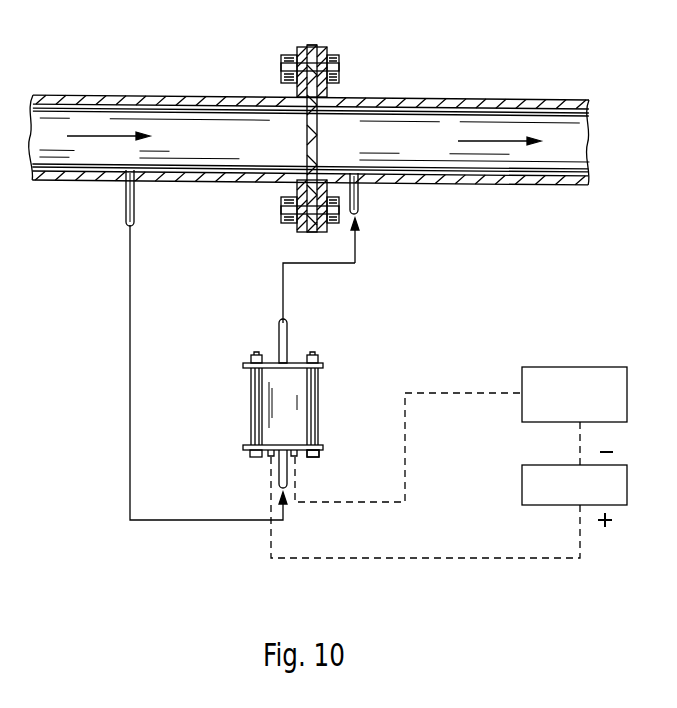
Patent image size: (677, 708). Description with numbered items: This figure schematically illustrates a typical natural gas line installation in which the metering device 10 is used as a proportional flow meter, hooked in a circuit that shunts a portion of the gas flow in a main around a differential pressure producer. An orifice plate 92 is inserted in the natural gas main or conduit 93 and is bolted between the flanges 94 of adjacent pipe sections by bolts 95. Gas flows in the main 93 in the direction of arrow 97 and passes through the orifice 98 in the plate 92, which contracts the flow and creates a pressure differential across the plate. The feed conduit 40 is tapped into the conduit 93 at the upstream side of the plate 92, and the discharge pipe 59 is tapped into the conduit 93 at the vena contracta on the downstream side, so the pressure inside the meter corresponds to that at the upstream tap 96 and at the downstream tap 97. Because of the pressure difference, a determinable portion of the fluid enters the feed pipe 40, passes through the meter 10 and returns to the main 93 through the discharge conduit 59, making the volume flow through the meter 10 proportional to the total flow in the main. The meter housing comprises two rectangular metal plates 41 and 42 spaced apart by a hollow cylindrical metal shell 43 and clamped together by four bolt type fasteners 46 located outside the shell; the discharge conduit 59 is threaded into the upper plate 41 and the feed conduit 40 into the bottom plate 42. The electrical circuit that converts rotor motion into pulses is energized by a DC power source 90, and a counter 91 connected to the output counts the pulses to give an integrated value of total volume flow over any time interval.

The metering device 10 is at (298, 403).
The feed conduit 40 is at (279, 477).
The upper plate 41 is at (243, 365).
The bottom plate 42 is at (243, 447).
The cylindrical metal shell 43 is at (250, 402).
The bolt type fasteners 46 is at (320, 453).
The discharge conduit 59 is at (288, 333).
The DC power source 90 is at (627, 480).
The counter 91 is at (627, 393).
The orifice plate 92 is at (314, 47).
The conduit 93 is at (490, 100).
The flanges 94 is at (332, 91).
The bolts 95 is at (281, 213).
The upstream tap 96 is at (130, 170).
The downstream tap / flow direction arrow 97 is at (110, 135).
The orifice 98 is at (318, 134).